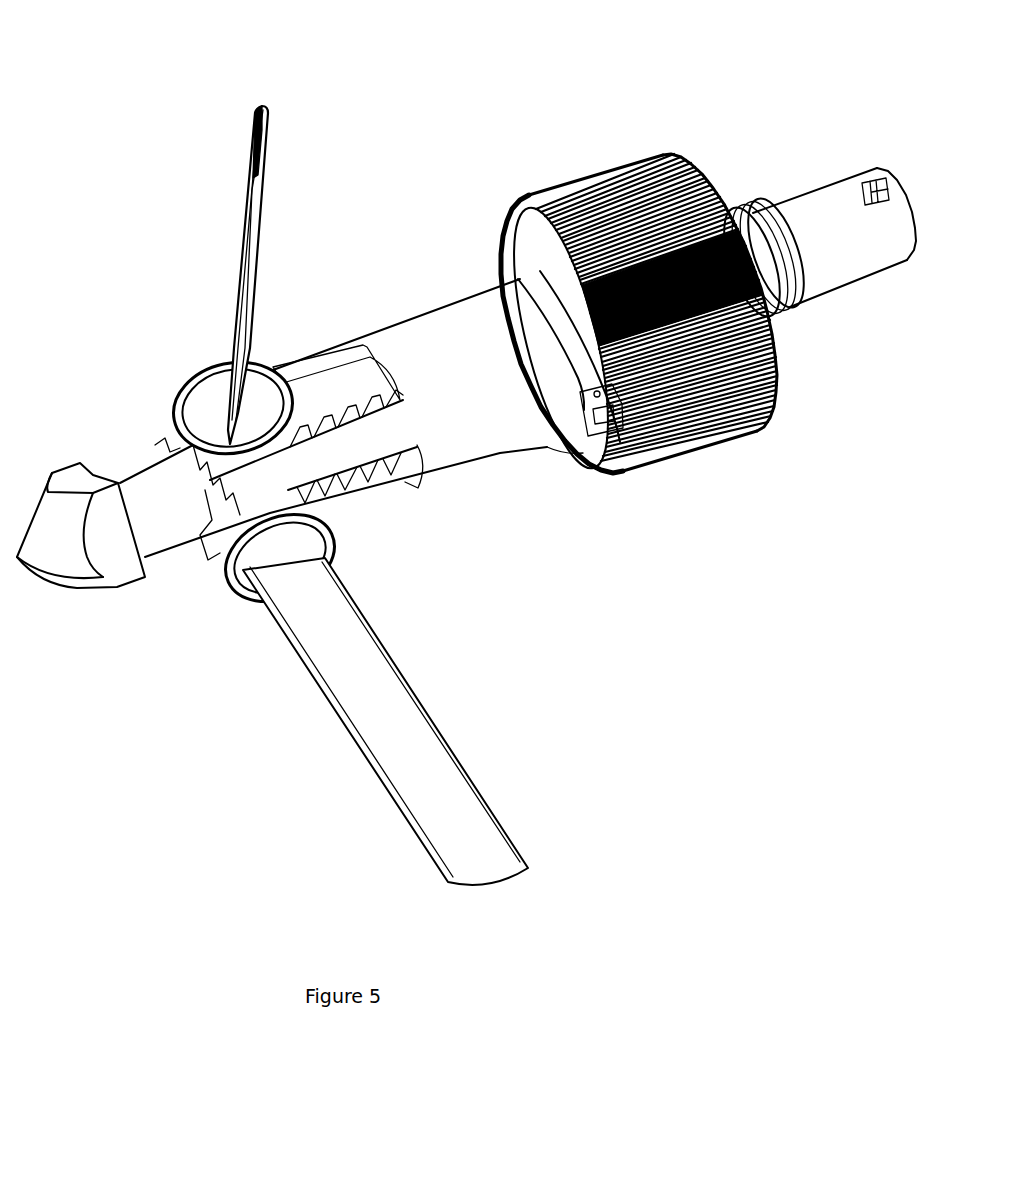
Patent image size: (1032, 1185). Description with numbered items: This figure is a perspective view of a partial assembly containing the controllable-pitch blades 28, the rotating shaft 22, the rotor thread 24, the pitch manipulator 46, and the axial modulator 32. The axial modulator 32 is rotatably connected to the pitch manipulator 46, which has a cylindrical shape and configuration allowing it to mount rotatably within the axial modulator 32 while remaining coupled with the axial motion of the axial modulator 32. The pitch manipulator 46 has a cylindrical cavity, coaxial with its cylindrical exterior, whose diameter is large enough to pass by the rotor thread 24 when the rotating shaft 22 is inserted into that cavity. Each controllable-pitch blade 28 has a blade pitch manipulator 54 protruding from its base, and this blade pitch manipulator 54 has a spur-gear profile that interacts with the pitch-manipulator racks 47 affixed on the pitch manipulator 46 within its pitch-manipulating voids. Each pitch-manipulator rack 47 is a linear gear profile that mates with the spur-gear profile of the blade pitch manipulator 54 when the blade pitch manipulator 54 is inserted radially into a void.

The rotating shaft 22 is at (849, 291).
The rotor thread 24 is at (754, 210).
The controllable-pitch blades 28 is at (241, 252).
The axial modulator 32 is at (643, 153).
The pitch manipulator 46 is at (359, 333).
The pitch-manipulator rack 47 is at (353, 488).
The blade pitch manipulator 54 is at (222, 556).